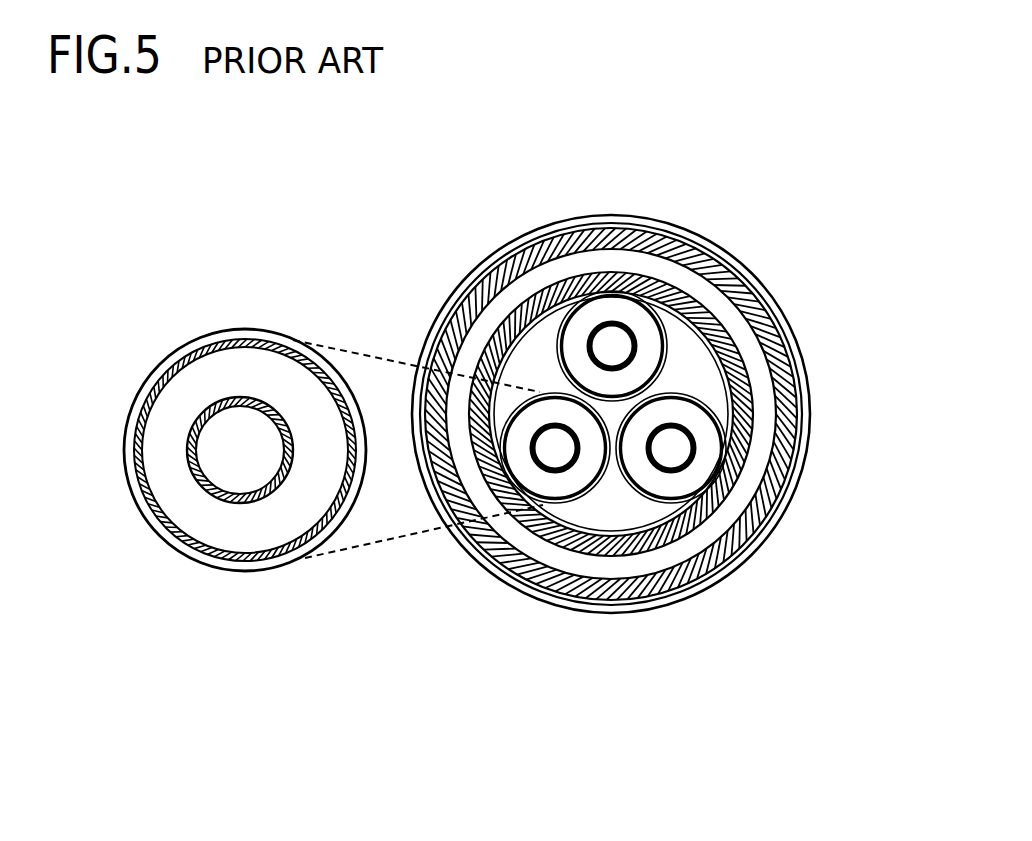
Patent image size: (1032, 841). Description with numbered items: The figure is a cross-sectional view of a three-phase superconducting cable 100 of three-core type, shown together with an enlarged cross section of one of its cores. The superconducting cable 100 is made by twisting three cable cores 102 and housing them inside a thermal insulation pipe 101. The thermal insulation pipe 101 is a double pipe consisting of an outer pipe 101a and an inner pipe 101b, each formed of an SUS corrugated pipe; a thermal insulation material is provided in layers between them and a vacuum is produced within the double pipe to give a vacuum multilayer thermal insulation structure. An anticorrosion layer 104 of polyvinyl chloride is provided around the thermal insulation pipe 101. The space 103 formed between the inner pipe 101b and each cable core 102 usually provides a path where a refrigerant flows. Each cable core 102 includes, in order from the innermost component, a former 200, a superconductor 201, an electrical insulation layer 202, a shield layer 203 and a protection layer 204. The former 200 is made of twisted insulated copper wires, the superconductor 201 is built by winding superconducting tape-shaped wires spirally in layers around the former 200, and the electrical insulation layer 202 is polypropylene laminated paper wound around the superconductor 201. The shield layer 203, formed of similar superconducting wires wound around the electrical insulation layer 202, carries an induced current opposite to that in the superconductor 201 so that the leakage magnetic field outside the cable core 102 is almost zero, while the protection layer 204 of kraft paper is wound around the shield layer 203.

The superconducting cable 100 is at (659, 431).
The thermal insulation pipe 101 is at (719, 332).
The outer pipe 101a is at (775, 303).
The inner pipe 101b is at (557, 313).
The cable core 102 is at (281, 386).
The space 103 is at (720, 392).
The anticorrosion layer 104 is at (800, 480).
The former 200 is at (187, 442).
The superconductor 201 is at (192, 470).
The electrical insulation layer 202 is at (183, 505).
The shield layer 203 is at (207, 557).
The protection layer 204 is at (268, 560).